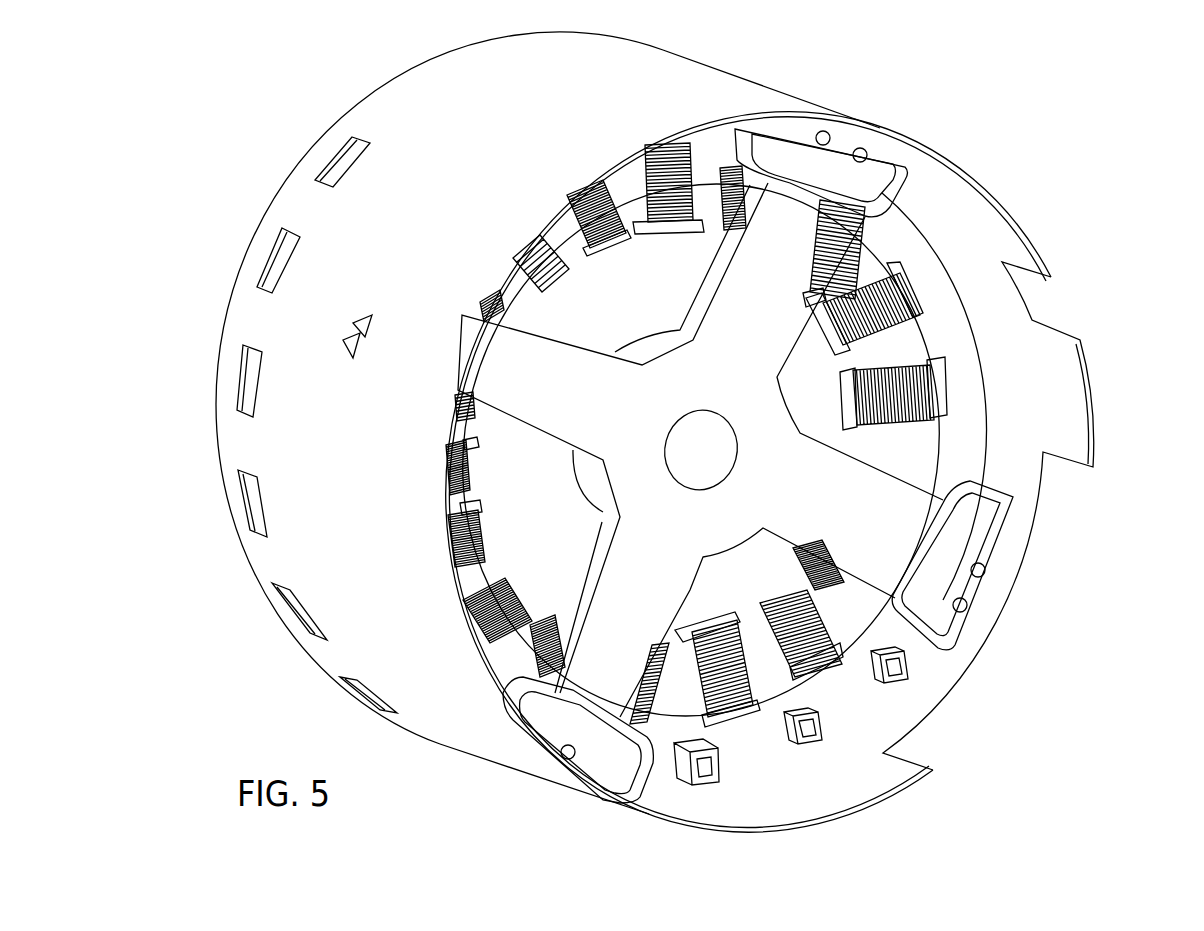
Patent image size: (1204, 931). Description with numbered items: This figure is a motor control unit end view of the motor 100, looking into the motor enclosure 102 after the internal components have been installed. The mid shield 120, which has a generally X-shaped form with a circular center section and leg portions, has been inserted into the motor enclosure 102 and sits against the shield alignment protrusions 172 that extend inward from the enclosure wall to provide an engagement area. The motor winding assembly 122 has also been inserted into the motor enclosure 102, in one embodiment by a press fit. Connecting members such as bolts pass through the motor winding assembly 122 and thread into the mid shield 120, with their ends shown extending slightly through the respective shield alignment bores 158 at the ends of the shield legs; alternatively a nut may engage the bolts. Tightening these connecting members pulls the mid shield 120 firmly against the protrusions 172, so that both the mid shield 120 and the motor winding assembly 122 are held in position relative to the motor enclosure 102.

The motor 100 is at (990, 103).
The motor enclosure 102 is at (655, 98).
The mid shield 120 is at (722, 392).
The motor winding assembly 122 is at (908, 227).
The shield alignment bores 158 is at (860, 155).
The shield alignment protrusions 172 is at (355, 322).